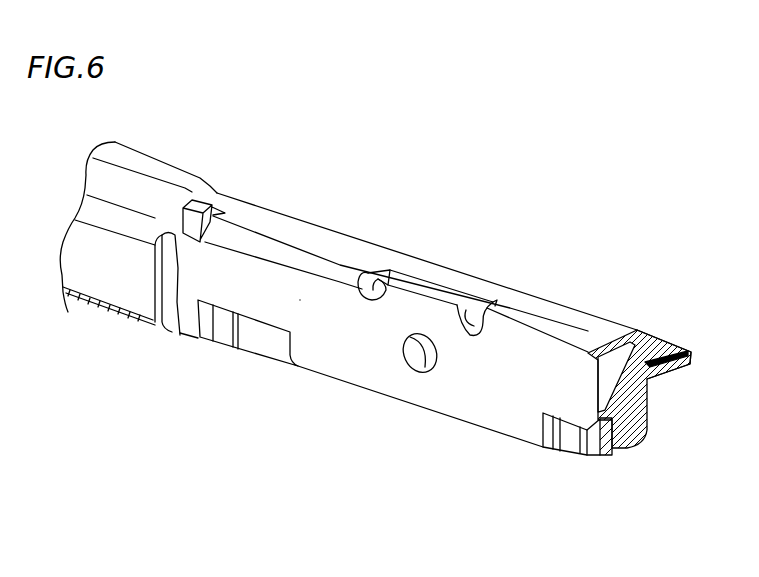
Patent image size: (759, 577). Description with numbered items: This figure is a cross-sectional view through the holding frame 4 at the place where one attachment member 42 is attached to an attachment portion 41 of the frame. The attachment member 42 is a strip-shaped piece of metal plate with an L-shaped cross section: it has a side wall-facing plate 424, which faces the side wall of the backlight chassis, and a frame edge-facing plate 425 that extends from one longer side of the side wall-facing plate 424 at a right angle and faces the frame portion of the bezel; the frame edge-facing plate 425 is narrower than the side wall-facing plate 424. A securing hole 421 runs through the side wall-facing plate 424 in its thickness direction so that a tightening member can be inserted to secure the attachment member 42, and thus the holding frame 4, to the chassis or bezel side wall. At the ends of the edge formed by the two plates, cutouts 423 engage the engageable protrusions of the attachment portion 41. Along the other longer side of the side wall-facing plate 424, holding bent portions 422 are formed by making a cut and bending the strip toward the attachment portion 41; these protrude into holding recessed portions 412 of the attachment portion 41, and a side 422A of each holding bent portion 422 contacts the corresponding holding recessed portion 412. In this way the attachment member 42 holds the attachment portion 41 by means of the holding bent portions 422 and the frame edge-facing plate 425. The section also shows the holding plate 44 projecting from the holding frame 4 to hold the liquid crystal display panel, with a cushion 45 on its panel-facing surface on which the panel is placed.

The holding frame 4 is at (158, 158).
The attachment portion 41 is at (648, 422).
The attachment member 42 is at (287, 210).
The holding plate 44 is at (672, 377).
The cushion 45 is at (657, 348).
The holding recessed portion 412 is at (618, 437).
The securing hole 421 is at (410, 362).
The holding bent portion 422 is at (260, 338).
The side of holding bent portion 422A is at (597, 457).
The cutout 423 is at (175, 318).
The side wall-facing plate 424 is at (460, 408).
The frame edge-facing plate 425 is at (544, 312).